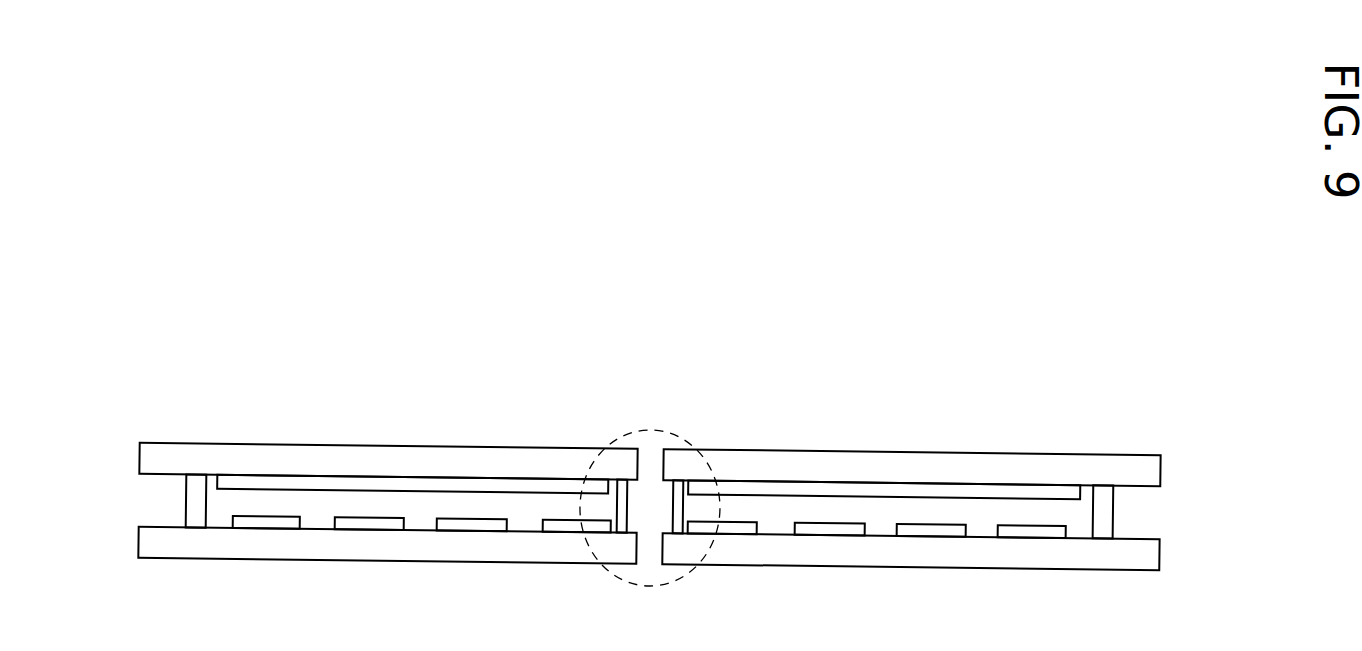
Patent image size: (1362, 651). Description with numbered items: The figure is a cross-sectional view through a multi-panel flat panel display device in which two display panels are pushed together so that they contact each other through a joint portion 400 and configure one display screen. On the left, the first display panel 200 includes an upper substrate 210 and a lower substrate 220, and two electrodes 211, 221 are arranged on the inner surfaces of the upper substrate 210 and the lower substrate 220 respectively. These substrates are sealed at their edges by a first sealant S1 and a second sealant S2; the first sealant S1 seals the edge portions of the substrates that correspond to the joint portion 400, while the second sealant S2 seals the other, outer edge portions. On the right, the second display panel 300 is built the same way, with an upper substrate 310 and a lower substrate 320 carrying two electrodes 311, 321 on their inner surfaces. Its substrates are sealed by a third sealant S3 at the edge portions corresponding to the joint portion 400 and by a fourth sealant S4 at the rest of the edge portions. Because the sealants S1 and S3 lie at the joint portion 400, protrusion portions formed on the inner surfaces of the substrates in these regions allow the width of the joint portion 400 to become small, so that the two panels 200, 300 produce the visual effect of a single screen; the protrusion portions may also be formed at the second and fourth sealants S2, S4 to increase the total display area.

The first display panel 200 is at (445, 386).
The upper substrate 210 is at (153, 464).
The lower substrate 220 is at (153, 552).
The electrode 211 is at (343, 486).
The electrode 221 is at (260, 528).
The first sealant S1 is at (620, 507).
The second sealant S2 is at (196, 498).
The third sealant S3 is at (680, 507).
The fourth sealant S4 is at (1107, 503).
The second display panel 300 is at (985, 392).
The upper substrate 310 is at (1155, 466).
The lower substrate 320 is at (1155, 546).
The electrode 311 is at (888, 487).
The electrode 321 is at (818, 536).
The joint portion 400 is at (657, 405).